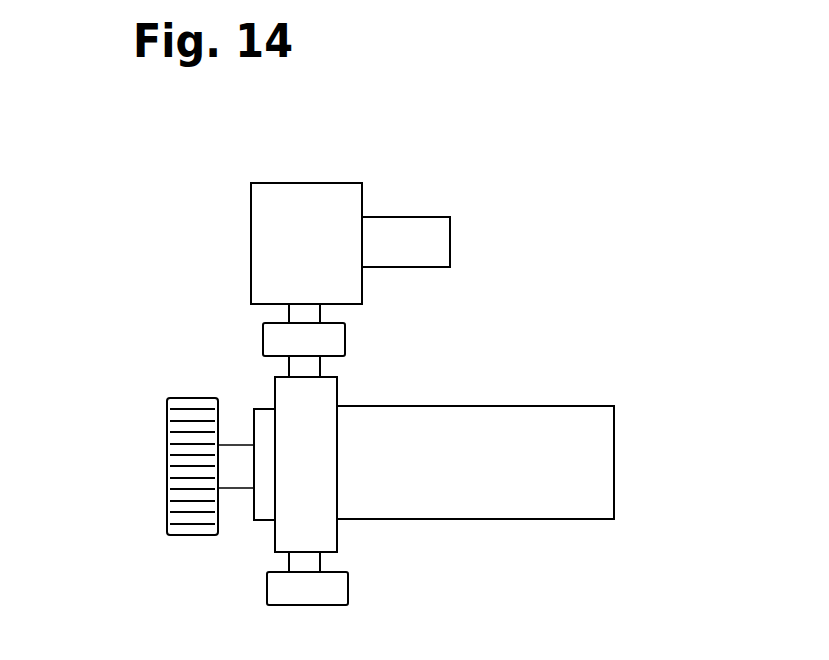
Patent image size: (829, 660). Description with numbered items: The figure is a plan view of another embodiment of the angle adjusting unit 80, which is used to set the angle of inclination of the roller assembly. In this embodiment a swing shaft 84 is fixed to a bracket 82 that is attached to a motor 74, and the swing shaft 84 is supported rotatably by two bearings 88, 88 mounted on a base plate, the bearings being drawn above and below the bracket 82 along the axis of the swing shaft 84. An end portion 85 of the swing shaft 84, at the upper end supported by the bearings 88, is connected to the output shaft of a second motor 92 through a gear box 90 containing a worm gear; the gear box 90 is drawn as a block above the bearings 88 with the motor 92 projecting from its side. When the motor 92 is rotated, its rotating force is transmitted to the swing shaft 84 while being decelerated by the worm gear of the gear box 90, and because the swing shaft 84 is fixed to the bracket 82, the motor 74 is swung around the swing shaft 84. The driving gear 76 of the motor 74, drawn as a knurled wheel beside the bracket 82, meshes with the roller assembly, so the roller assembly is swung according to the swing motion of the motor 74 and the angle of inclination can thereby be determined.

The motor 74 is at (605, 469).
The driving gear 76 is at (193, 538).
The angle adjusting unit 80 is at (222, 325).
The bracket 82 is at (318, 470).
The swing shaft 84 is at (307, 363).
The end portion 85 is at (303, 297).
The bearing 88 is at (335, 338).
The gear box 90 is at (288, 197).
The motor 92 is at (398, 225).